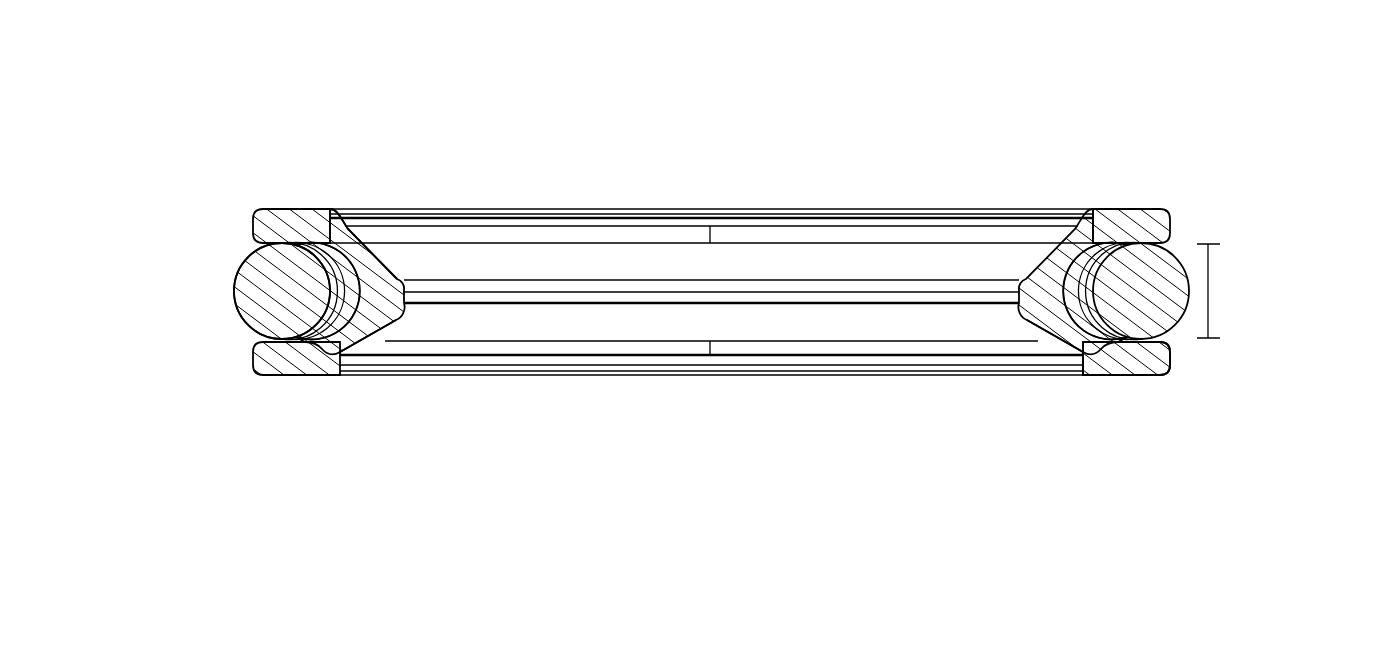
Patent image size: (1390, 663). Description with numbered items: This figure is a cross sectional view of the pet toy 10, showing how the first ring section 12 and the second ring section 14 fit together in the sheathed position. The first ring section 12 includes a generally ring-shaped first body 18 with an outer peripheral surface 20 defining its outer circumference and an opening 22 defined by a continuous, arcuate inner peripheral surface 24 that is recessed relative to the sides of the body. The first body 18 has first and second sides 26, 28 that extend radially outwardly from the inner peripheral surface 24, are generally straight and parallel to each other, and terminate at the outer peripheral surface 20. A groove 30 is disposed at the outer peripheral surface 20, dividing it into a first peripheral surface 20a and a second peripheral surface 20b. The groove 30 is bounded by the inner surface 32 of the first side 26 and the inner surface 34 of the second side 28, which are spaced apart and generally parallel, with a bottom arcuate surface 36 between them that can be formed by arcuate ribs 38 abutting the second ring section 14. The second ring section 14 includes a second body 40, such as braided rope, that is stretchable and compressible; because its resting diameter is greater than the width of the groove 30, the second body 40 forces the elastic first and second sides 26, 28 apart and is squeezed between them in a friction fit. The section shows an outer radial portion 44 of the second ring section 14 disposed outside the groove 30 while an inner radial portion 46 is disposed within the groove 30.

The pet toy 10 is at (166, 169).
The first ring section 12 is at (517, 378).
The second ring section 14 is at (1160, 375).
The first body 18 is at (733, 208).
The outer peripheral surface 20 is at (1327, 227).
The first peripheral surface 20a is at (1172, 353).
The second peripheral surface 20b is at (1168, 232).
The opening 22 is at (833, 292).
The inner peripheral surface 24 is at (752, 327).
The first side 26 is at (277, 376).
The second side 28 is at (290, 209).
The groove 30 is at (252, 321).
The inner surface of the first side 32 is at (257, 345).
The inner surface of the second side 34 is at (258, 246).
The bottom arcuate surface 36 is at (306, 340).
The arcuate ribs 38 is at (350, 239).
The second body 40 is at (232, 280).
The outer radial portion 44 is at (232, 292).
The inner radial portion 46 is at (1105, 334).